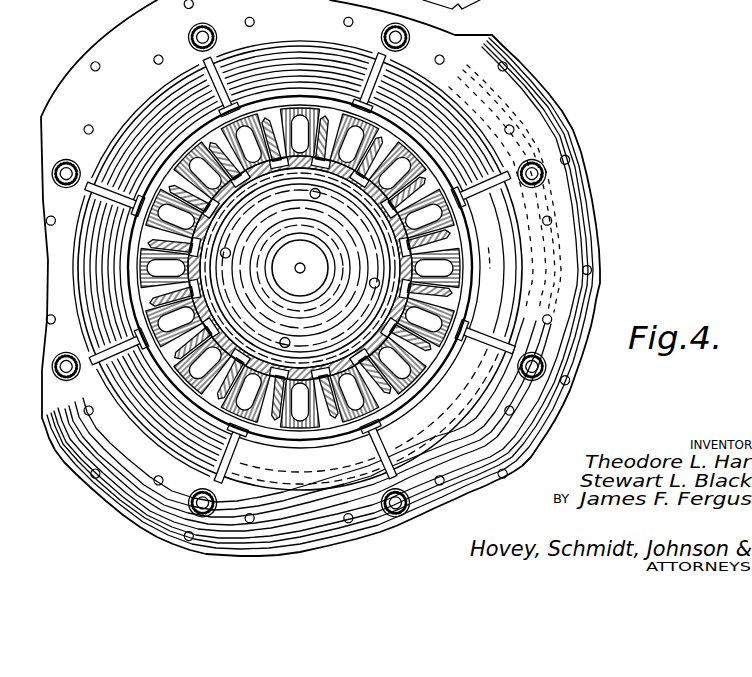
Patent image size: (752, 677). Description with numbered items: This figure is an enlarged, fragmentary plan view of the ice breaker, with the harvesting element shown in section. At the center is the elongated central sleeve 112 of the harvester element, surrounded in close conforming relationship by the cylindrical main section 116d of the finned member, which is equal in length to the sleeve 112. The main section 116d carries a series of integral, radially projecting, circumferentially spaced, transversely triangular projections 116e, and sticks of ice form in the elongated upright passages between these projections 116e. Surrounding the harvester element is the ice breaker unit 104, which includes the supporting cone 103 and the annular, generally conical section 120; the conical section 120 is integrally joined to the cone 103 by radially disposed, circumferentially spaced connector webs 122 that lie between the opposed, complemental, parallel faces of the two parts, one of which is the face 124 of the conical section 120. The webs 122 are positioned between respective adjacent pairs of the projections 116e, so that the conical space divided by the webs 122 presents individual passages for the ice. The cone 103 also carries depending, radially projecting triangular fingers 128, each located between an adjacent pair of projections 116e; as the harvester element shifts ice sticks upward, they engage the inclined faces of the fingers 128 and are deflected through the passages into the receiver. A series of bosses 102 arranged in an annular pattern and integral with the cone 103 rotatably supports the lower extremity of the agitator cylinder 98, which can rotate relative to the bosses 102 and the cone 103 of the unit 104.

The agitator cylinder 98 is at (398, 414).
The bosses 102 is at (440, 362).
The supporting cone 103 is at (258, 437).
The ice breaker unit 104 is at (600, 228).
The central sleeve 112 is at (368, 333).
The cylindrical main section 116d is at (307, 368).
The transversely triangular projections 116e is at (452, 287).
The conical section 120 is at (548, 127).
The connector webs 122 is at (484, 196).
The face of conical section 124 is at (503, 263).
The fingers 128 is at (373, 291).